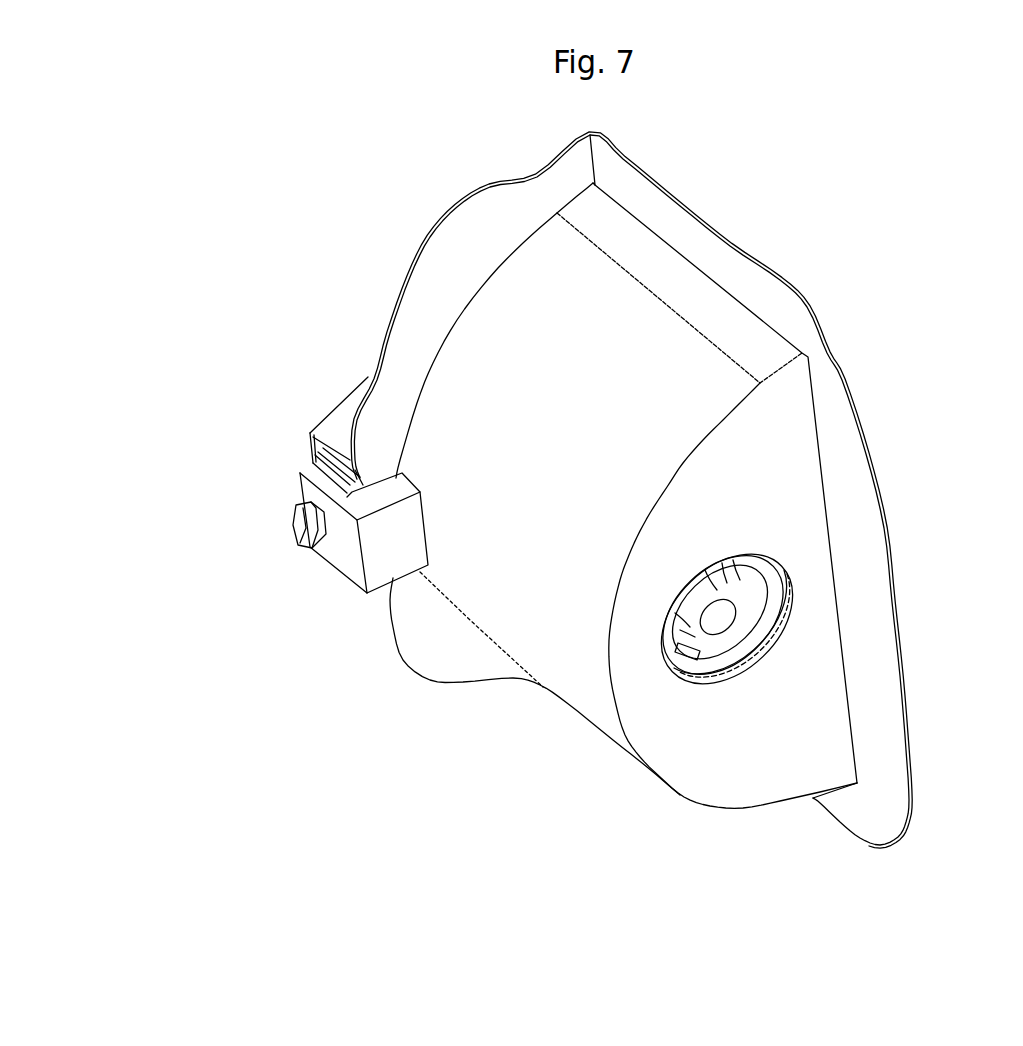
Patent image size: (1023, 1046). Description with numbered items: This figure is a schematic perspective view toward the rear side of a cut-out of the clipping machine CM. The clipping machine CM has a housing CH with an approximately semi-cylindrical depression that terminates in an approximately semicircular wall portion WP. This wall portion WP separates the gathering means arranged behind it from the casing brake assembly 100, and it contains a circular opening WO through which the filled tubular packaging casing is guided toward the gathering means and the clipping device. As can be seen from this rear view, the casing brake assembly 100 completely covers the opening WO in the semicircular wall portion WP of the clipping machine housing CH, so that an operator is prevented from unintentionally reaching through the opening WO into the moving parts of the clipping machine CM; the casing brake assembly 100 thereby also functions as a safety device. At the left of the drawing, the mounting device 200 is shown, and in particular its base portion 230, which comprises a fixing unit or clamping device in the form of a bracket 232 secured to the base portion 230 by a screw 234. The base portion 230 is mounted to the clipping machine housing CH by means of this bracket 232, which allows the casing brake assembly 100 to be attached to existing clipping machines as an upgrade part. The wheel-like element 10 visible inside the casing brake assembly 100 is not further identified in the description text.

The clipping machine CM is at (907, 223).
The housing CH is at (622, 182).
The semicircular wall portion WP is at (783, 452).
The casing brake assembly 100 is at (743, 637).
The wheel 10 is at (697, 593).
The circular opening WO is at (720, 688).
The mounting device 200 is at (180, 442).
The base portion 230 is at (343, 432).
The bracket 232 is at (343, 562).
The screw 234 is at (302, 533).